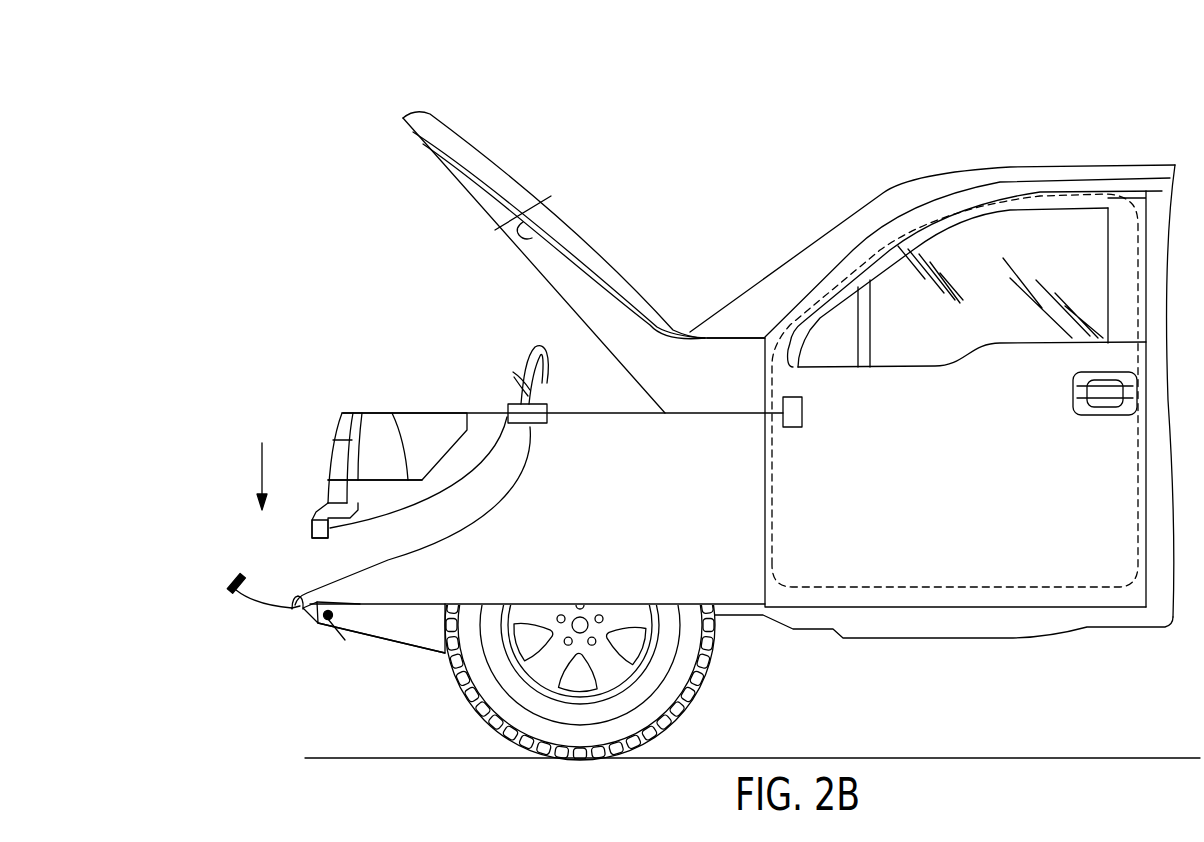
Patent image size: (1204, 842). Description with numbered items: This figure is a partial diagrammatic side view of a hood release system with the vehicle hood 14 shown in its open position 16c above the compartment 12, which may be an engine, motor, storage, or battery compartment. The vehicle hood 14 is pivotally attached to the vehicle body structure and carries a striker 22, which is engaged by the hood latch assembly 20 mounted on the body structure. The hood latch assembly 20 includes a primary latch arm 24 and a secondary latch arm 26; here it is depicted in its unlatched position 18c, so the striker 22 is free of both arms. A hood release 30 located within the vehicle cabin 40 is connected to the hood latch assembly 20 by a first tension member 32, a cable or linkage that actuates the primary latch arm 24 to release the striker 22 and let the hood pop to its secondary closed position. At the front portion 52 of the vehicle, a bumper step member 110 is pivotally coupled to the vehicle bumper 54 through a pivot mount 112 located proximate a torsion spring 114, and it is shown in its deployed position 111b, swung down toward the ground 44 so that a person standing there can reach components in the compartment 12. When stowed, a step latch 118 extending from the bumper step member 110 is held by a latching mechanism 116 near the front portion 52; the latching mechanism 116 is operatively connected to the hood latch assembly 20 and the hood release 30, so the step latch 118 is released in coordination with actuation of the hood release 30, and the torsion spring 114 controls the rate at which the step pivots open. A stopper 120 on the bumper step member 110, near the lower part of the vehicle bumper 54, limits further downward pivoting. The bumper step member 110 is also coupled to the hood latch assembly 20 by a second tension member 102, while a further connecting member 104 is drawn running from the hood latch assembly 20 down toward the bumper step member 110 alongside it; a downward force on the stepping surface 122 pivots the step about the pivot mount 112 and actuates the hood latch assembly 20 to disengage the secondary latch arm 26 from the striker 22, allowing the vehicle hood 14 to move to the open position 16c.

The compartment 12 is at (718, 580).
The vehicle hood 14 is at (584, 262).
The open position 16c is at (575, 198).
The unlatched position 18c is at (518, 416).
The hood latch assembly 20 is at (544, 445).
The striker 22 is at (520, 222).
The primary latch arm 24 is at (522, 402).
The secondary latch arm 26 is at (547, 382).
The hood release 30 is at (803, 413).
The first tension member 32 is at (698, 415).
The vehicle cabin 40 is at (1103, 588).
The ground 44 is at (386, 757).
The front portion 52 is at (409, 631).
The vehicle bumper 54 is at (322, 638).
The second tension member 102 is at (460, 477).
The second cable 104 is at (473, 530).
The bumper step member 110 is at (237, 600).
The deployed position 111b is at (270, 623).
The pivot mount 112 is at (344, 613).
The torsion spring 114 is at (340, 627).
The latching mechanism 116 is at (330, 533).
The step latch 118 is at (230, 582).
The stopper 120 is at (300, 618).
The stepping surface 122 is at (273, 605).